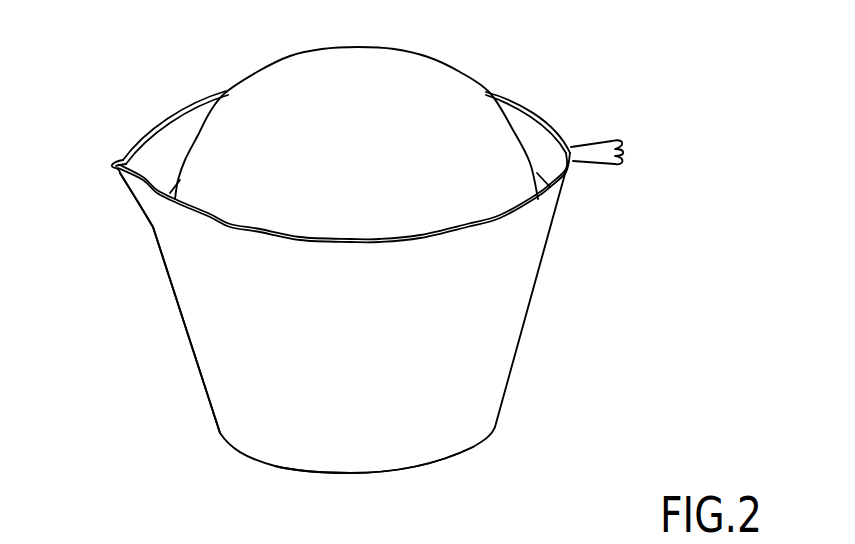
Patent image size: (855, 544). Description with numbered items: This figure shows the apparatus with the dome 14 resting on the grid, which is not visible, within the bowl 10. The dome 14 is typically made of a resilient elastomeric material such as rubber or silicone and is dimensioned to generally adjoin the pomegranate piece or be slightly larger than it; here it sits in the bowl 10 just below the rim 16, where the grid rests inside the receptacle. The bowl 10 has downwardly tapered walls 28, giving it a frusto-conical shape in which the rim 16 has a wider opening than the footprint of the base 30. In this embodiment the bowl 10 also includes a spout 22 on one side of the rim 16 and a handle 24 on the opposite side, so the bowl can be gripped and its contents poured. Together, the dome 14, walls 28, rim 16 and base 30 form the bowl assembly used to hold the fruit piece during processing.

The bowl 10 is at (181, 317).
The dome 14 is at (430, 80).
The rim 16 is at (178, 112).
The spout 22 is at (127, 158).
The handle 24 is at (595, 140).
The downwardly tapered walls 28 is at (532, 300).
The base 30 is at (267, 467).